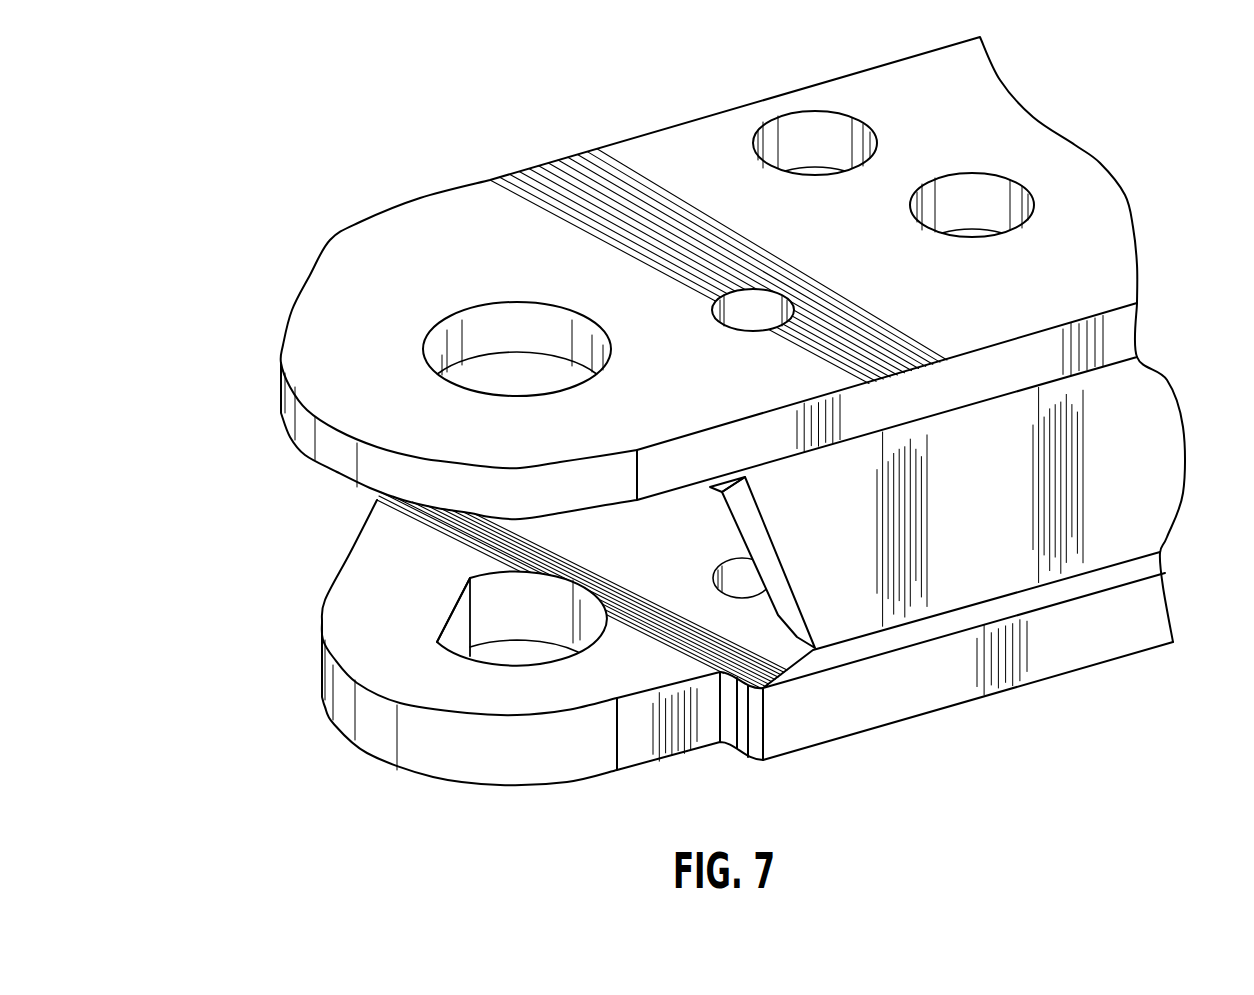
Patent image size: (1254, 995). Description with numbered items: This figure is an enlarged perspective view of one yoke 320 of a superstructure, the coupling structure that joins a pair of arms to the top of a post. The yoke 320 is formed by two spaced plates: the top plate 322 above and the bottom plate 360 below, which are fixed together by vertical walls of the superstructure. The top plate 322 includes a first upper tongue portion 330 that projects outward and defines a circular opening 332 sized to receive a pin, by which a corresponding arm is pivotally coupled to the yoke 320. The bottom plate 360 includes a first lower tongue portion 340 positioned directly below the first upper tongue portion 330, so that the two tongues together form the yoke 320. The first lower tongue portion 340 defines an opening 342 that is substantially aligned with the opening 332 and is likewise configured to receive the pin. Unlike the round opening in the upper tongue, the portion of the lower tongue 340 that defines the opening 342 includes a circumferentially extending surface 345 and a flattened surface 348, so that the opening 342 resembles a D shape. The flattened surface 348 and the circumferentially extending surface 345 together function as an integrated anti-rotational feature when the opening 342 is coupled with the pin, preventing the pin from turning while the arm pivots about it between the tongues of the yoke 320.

The yoke 320 is at (667, 411).
The top plate 322 is at (817, 242).
The first upper tongue portion 330 is at (679, 278).
The opening 332 is at (539, 397).
The first lower tongue portion 340 is at (521, 638).
The opening 342 is at (547, 622).
The circumferentially extending surface 345 is at (578, 617).
The flattened surface 348 is at (455, 623).
The bottom plate 360 is at (818, 727).